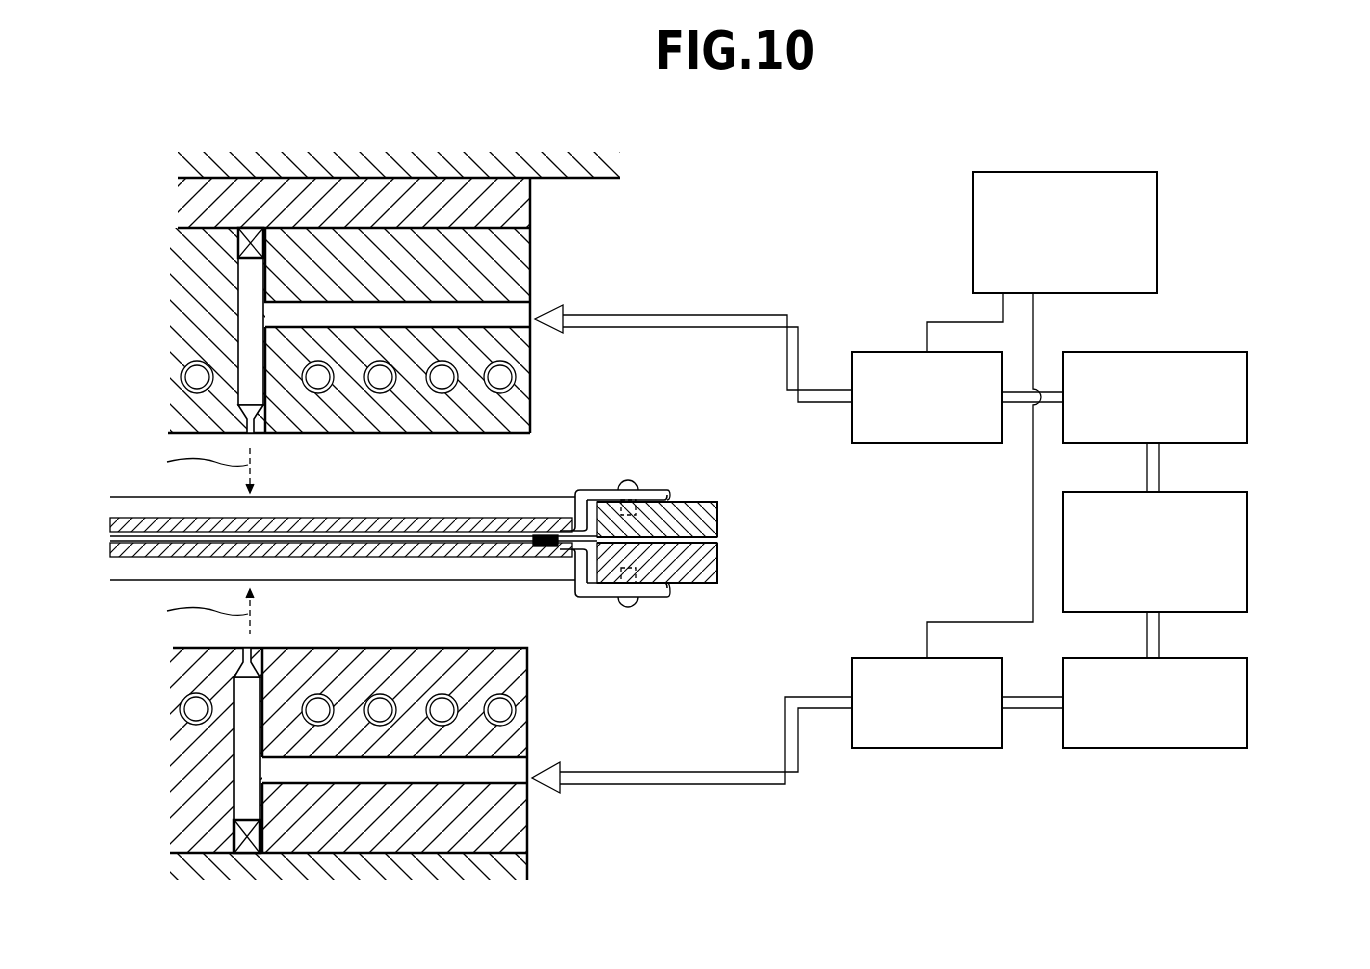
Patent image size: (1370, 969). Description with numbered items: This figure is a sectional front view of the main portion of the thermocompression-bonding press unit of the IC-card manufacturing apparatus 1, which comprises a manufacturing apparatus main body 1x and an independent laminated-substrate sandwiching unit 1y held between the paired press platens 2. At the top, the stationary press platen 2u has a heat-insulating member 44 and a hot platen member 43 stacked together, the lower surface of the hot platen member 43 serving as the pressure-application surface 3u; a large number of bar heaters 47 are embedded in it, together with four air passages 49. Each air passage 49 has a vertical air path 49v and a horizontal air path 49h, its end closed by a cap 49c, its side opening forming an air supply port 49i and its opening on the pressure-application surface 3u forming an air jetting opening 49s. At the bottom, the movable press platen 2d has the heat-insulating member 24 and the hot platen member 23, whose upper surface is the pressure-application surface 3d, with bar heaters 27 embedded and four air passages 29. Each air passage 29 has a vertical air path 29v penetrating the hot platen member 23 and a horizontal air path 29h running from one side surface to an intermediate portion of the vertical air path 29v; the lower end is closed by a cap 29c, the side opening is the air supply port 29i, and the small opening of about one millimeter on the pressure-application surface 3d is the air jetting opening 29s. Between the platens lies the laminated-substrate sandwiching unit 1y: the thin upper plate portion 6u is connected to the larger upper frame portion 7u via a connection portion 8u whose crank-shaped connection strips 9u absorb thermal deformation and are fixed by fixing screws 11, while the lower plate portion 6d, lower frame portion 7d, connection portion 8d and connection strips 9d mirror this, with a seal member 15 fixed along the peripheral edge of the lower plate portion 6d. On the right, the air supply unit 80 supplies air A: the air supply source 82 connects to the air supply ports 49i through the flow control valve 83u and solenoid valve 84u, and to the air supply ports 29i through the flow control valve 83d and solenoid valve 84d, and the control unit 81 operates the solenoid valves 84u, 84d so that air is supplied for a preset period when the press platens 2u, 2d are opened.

The IC-card manufacturing apparatus 1 is at (1225, 172).
The manufacturing apparatus main body 1x is at (780, 245).
The laminated-substrate sandwiching unit 1y is at (738, 540).
The press platens 2 is at (663, 180).
The stationary press platen 2u is at (612, 252).
The movable press platen 2d is at (573, 830).
The pressure-application surface 3u is at (530, 432).
The pressure-application surface 3d is at (527, 652).
The upper plate portion 6u is at (440, 518).
The lower plate portion 6d is at (436, 560).
The upper rectangular frame portion 7u is at (717, 510).
The lower frame portion 7d is at (717, 585).
The connection portion 8u is at (658, 478).
The connection portion 8d is at (662, 612).
The connection strips 9u is at (582, 490).
The connection strips 9d is at (576, 597).
The fixing screws 11 is at (632, 476).
The seal member 15 is at (545, 546).
The hot platen member 23 is at (527, 838).
The heat-insulating member 24 is at (527, 870).
The bar heaters 27 is at (181, 710).
The air passages 29 is at (388, 786).
The cap 29c is at (236, 846).
The vertical air path 29v is at (262, 818).
The horizontal air path 29h is at (484, 784).
The air supply port 29i is at (530, 770).
The air jetting opening 29s is at (256, 646).
The hot platen member 43 is at (530, 378).
The heat-insulating member 44 is at (530, 218).
The bar heaters 47 is at (181, 377).
The air passages 49 is at (370, 320).
The cap 49c is at (237, 243).
The vertical air path 49v is at (270, 286).
The horizontal air path 49h is at (432, 298).
The air supply port 49i is at (530, 320).
The air jetting opening 49s is at (254, 436).
The air supply unit 80 is at (1267, 430).
The control unit 81 is at (1157, 245).
The air supply source 82 is at (1247, 582).
The flow control valve 83u is at (1190, 352).
The flow control valve 83d is at (1153, 748).
The solenoid valve 84u is at (890, 352).
The solenoid valve 84d is at (930, 748).
The air A is at (197, 538).